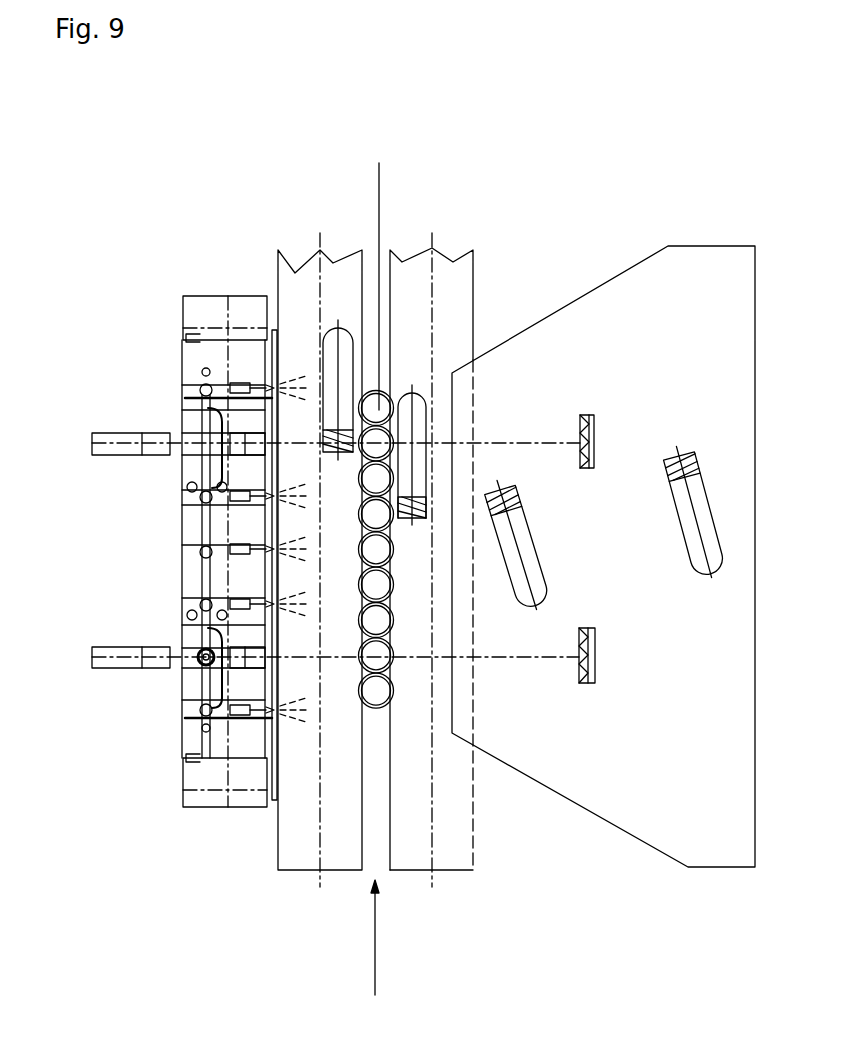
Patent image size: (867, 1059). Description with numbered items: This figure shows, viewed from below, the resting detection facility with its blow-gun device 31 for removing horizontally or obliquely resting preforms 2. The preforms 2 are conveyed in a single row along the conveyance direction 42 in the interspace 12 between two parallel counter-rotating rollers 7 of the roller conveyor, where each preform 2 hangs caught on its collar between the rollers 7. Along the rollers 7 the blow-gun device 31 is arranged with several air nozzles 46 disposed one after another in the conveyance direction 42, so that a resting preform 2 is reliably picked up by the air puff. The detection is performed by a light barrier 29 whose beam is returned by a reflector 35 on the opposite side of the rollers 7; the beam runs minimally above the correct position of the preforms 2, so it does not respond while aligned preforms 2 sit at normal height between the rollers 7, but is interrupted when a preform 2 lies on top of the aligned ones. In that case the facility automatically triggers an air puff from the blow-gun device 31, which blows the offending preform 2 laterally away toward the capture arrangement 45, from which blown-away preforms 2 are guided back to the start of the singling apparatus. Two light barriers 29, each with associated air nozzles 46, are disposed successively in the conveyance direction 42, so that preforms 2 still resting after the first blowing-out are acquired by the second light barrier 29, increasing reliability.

The preform 2 is at (380, 273).
The roller 7 is at (303, 862).
The interspace 12 is at (374, 954).
The light barrier 29 is at (115, 440).
The blow-gun device 31 is at (210, 338).
The reflector 35 is at (590, 415).
The conveyance direction 42 is at (416, 236).
The capture arrangement 45 is at (667, 833).
The air nozzle 46 is at (188, 602).